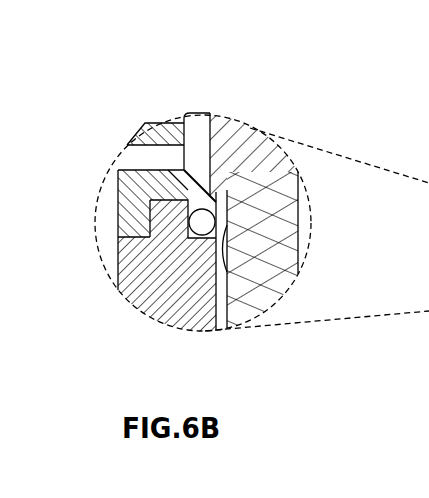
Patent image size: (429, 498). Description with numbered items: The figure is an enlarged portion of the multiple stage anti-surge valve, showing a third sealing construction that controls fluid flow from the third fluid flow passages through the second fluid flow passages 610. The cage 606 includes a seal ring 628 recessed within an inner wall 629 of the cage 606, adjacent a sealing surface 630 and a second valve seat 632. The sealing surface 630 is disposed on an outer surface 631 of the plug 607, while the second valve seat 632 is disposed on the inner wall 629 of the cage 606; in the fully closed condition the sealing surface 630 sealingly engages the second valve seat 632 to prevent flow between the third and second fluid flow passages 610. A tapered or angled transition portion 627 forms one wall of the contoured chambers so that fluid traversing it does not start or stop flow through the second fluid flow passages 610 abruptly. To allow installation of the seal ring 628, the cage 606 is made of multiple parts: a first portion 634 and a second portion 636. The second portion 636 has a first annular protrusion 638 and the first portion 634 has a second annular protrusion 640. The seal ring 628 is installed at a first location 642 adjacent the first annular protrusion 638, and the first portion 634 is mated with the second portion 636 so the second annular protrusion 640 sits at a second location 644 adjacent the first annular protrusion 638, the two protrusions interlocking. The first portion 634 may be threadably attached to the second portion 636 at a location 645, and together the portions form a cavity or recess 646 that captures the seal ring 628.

The cage 606 is at (160, 298).
The plug 607 is at (275, 153).
The second fluid flow passages 610 is at (140, 153).
The transition portion 627 is at (233, 288).
The seal ring 628 is at (200, 228).
The inner wall 629 is at (198, 115).
The sealing surface 630 is at (237, 130).
The outer surface 631 is at (198, 113).
The second valve seat 632 is at (218, 187).
The first portion 634 is at (120, 172).
The second portion 636 is at (118, 278).
The first annular protrusion 638 is at (163, 158).
The second annular protrusion 640 is at (117, 217).
The first location 642 is at (228, 226).
The second location 644 is at (117, 237).
The location 645 is at (117, 193).
The cavity or recess 646 is at (186, 240).